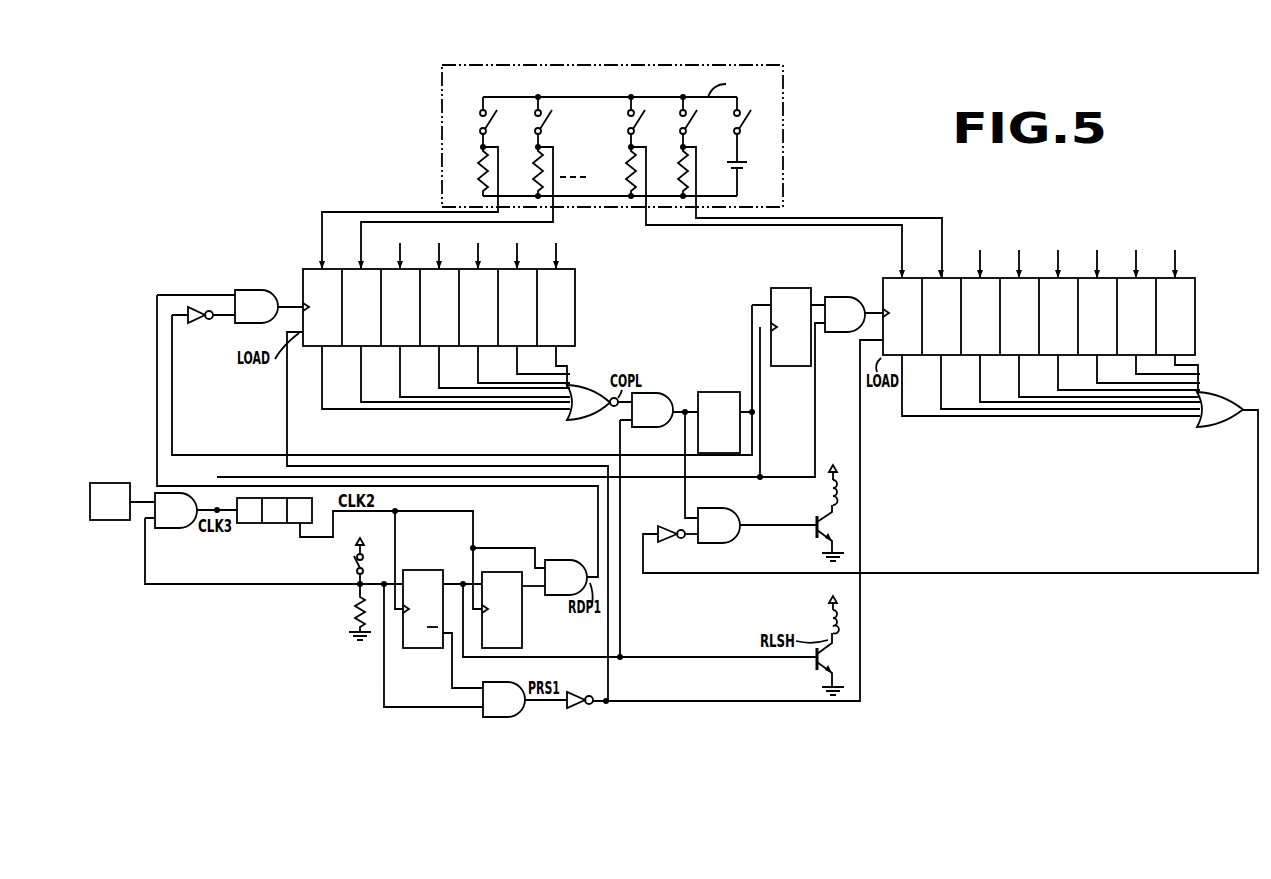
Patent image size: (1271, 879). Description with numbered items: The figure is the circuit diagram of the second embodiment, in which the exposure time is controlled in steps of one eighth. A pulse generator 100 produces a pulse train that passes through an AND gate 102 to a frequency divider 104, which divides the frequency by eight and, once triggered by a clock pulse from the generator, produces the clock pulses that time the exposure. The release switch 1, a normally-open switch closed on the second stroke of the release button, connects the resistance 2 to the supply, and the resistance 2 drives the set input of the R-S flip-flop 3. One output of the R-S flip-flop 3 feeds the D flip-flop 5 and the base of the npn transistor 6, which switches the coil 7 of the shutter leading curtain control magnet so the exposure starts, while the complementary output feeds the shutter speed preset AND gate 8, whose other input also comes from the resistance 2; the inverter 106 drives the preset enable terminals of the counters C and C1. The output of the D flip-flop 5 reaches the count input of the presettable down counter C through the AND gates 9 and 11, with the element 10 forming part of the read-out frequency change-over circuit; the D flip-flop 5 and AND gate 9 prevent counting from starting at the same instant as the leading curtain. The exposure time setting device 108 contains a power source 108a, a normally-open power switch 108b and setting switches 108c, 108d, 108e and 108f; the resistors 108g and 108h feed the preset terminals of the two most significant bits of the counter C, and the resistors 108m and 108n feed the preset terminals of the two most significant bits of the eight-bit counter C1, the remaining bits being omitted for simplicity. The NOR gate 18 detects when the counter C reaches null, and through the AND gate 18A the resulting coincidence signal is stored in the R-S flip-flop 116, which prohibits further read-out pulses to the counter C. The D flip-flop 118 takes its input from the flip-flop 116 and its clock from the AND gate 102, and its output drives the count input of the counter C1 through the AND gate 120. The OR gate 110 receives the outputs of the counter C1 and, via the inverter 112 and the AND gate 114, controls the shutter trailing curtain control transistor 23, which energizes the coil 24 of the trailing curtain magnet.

The exposure time setting device 108 is at (783, 128).
The power source 108a is at (745, 165).
The power switch 108b is at (726, 127).
The exposure time information setting switch 108c is at (471, 122).
The exposure time information setting switch 108d is at (526, 122).
The exposure time information setting switch 108e is at (620, 122).
The exposure time information setting switch 108f is at (673, 122).
The resistor 108g is at (466, 170).
The resistor 108h is at (521, 170).
The resistor 108m is at (614, 170).
The resistor 108n is at (668, 170).
The presettable up-down counter C is at (575, 307).
The presettable counter C1 is at (1195, 315).
The read-out frequency change-over circuit element 10 is at (196, 323).
The AND gate 11 is at (256, 306).
The NOR gate 18 is at (592, 402).
The AND gate 18A is at (652, 410).
The R-S flip-flop 116 is at (719, 392).
The D flip-flop 118 is at (792, 288).
The AND gate 120 is at (845, 314).
The OR gate 110 is at (1220, 409).
The pulse generator 100 is at (110, 522).
The AND gate 102 is at (176, 510).
The frequency divider 104 is at (246, 527).
The release switch 1 is at (365, 562).
The resistance 2 is at (354, 606).
The R-S flip-flop 3 is at (428, 570).
The D flip-flop 5 is at (522, 620).
The AND gate 9 is at (566, 577).
The shutter speed preset AND gate 8 is at (504, 699).
The inverter 106 is at (579, 687).
The inverter 112 is at (668, 542).
The AND gate 114 is at (719, 525).
The shutter trailing curtain control transistor 23 is at (833, 525).
The relay coil 24 is at (828, 493).
The npn transistor 6 is at (833, 659).
The coil of shutter leading curtain control magnet 7 is at (826, 625).